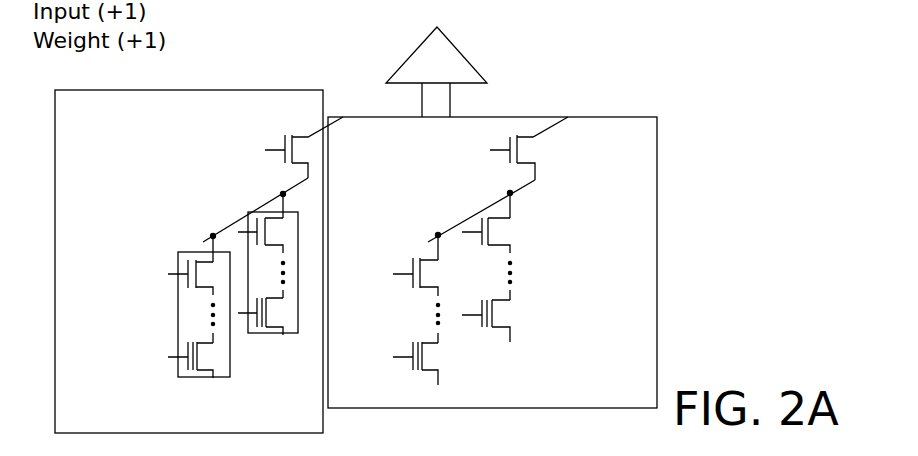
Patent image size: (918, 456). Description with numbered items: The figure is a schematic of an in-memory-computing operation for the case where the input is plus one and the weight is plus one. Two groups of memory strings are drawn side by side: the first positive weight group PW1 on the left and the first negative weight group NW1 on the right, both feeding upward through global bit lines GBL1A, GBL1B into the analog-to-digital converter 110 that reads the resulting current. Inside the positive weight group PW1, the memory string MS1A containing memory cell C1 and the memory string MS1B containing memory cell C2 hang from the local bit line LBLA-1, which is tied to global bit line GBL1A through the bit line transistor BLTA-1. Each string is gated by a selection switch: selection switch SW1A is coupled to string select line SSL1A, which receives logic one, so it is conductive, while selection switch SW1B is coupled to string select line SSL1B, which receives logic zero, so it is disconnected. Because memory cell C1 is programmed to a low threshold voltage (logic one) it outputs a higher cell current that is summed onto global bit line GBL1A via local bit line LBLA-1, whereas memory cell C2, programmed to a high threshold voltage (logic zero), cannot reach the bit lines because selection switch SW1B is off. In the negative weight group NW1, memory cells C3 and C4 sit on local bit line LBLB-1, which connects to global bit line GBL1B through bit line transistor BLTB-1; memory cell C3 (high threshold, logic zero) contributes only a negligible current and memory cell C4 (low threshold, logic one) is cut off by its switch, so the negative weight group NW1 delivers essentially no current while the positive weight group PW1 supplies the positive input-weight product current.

The analog-to-digital converter (ADC) 110 is at (413, 52).
The first positive weight group PW1 is at (188, 91).
The first negative weight group NW1 is at (658, 262).
The global bit line GBL1A is at (379, 100).
The global bit line GBL1B is at (491, 100).
The bit line transistor A BLTA-1 is at (302, 132).
The bit line transistor B BLTB-1 is at (535, 150).
The local bit line LBLA-1 is at (296, 181).
The local bit line LBLB-1 is at (523, 183).
The selection switch SW1A is at (208, 290).
The selection switch SW1B is at (274, 212).
The string select line SSL1A is at (249, 265).
The string select line SSL1B is at (314, 223).
The memory cell C1 is at (196, 327).
The memory cell C2 is at (269, 288).
The memory cell C3 is at (419, 353).
The memory cell C4 is at (492, 310).
The memory string MS1A is at (213, 380).
The memory string MS1B is at (286, 338).